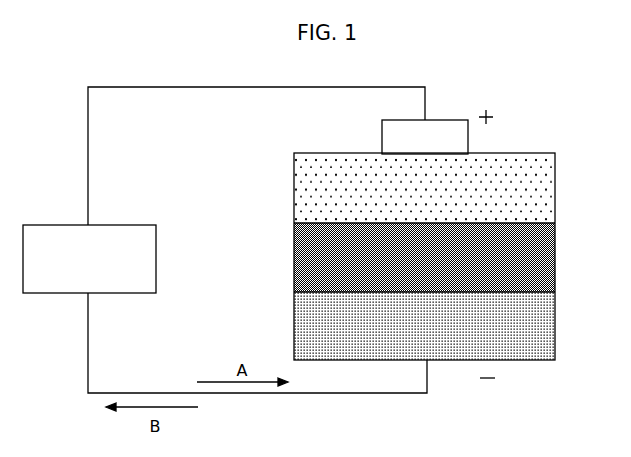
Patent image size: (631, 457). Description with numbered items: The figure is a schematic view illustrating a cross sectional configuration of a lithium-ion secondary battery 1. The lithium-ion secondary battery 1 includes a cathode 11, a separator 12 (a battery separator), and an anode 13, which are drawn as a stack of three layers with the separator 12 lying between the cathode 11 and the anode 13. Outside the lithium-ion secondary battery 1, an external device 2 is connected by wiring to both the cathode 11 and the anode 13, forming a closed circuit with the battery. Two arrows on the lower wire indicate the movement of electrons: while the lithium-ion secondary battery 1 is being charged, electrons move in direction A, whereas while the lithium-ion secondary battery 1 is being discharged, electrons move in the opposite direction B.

The lithium-ion secondary battery 1 is at (593, 153).
The external device 2 is at (148, 260).
The cathode 11 is at (547, 187).
The separator 12 is at (558, 257).
The anode 13 is at (545, 326).